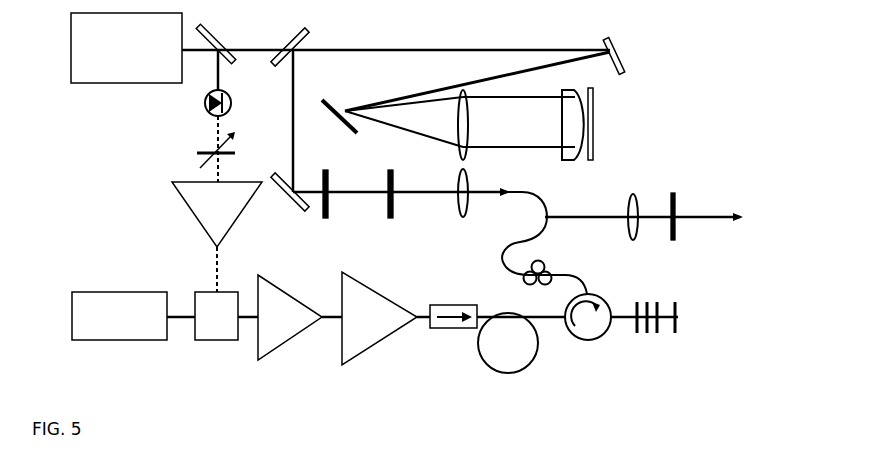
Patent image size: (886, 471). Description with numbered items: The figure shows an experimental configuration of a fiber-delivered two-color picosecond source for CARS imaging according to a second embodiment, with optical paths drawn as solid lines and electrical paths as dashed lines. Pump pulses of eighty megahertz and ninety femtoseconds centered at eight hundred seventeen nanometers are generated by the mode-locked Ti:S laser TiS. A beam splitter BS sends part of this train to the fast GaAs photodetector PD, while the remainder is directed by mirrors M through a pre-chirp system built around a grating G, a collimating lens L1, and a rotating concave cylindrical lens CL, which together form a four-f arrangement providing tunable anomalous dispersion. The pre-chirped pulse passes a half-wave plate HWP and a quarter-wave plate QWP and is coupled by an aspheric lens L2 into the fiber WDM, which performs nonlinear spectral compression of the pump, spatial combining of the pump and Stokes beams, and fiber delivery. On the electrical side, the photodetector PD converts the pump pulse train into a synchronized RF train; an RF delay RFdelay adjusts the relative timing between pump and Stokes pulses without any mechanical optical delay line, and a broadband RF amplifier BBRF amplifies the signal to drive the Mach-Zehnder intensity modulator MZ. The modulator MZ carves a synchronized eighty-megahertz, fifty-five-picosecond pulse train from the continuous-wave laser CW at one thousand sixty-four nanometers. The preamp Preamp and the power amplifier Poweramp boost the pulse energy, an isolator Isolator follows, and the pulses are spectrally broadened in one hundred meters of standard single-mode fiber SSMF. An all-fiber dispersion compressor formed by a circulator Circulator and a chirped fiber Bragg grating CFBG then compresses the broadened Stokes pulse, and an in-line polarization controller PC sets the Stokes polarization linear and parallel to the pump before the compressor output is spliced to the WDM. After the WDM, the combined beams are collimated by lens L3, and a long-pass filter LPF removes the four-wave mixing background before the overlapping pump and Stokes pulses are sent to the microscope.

The mode-locked Ti:S laser TiS is at (126, 48).
The beam splitter BS is at (218, 44).
The mirror M is at (448, 120).
The photodetector PD is at (159, 116).
The RF delay RFdelay is at (172, 150).
The broadband RF amplifier BBRF is at (217, 237).
The half-wave plate HWP is at (318, 204).
The quarter-wave plate QWP is at (384, 205).
The collimating lens L1 is at (506, 125).
The aspheric lens L2 is at (474, 193).
The collimating lens L3 is at (644, 217).
The grating G is at (466, 99).
The concave cylindrical lens CL is at (558, 125).
The fiber WDM is at (653, 232).
The long pass filter LPF is at (689, 216).
The polarization controller PC is at (538, 281).
The 1064-nm CW laser CW is at (119, 316).
The Mach-Zehnder intensity modulator MZ is at (216, 316).
The preamp Preamp is at (290, 317).
The power amplifier Poweramp is at (379, 318).
The isolator Isolator is at (448, 304).
The standard single-mode fiber SSMF is at (508, 343).
The circulator Circulator is at (587, 329).
The chirped fiber Bragg grating CFBG is at (655, 333).